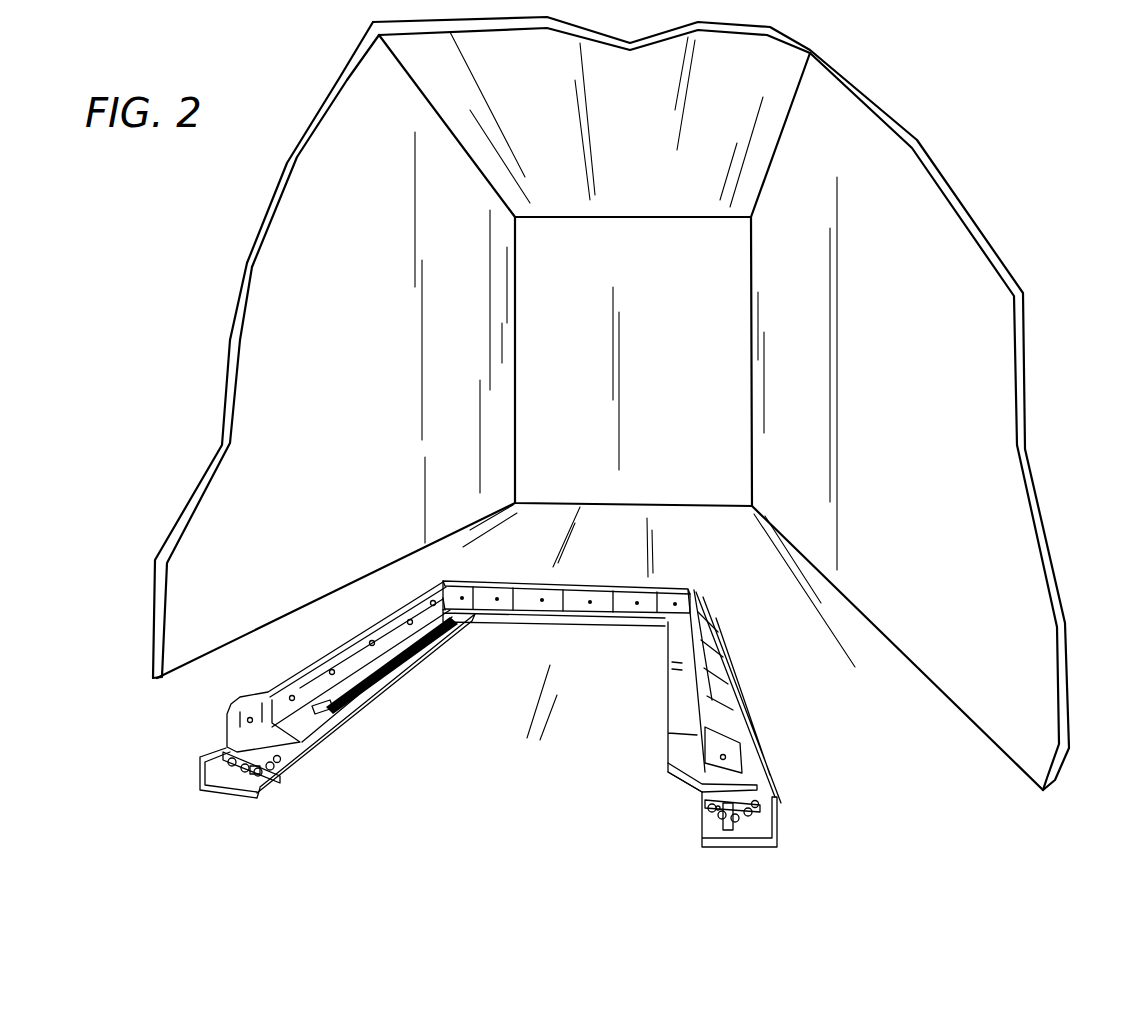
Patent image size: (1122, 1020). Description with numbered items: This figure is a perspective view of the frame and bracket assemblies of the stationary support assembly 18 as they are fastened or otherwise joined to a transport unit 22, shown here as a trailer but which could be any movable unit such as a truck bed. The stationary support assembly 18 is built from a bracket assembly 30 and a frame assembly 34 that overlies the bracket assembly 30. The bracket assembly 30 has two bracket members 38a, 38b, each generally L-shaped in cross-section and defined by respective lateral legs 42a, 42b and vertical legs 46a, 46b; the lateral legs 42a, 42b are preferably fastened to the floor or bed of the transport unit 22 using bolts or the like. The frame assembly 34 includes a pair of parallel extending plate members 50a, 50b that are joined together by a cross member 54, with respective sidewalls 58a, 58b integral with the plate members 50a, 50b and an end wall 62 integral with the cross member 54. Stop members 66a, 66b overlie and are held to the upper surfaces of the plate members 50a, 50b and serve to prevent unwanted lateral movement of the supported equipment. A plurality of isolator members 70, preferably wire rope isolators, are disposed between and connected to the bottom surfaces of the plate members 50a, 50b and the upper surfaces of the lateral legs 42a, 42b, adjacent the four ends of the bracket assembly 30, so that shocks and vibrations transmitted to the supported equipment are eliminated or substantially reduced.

The stationary support assembly 18 is at (509, 655).
The transport unit 22 is at (928, 150).
The bracket assembly 30 is at (745, 748).
The frame assembly 34 is at (702, 643).
The bracket member 38a is at (224, 793).
The bracket member 38b is at (785, 841).
The lateral leg 42a is at (260, 795).
The lateral leg 42b is at (722, 842).
The vertical leg 46a is at (214, 756).
The vertical leg 46b is at (775, 800).
The plate member 50a is at (320, 720).
The plate member 50b is at (688, 772).
The cross member 54 is at (547, 613).
The sidewall 58a is at (347, 658).
The sidewall 58b is at (720, 737).
The end wall 62 is at (578, 593).
The stop member 66a is at (397, 647).
The stop member 66b is at (680, 695).
The isolator member 70 is at (283, 773).